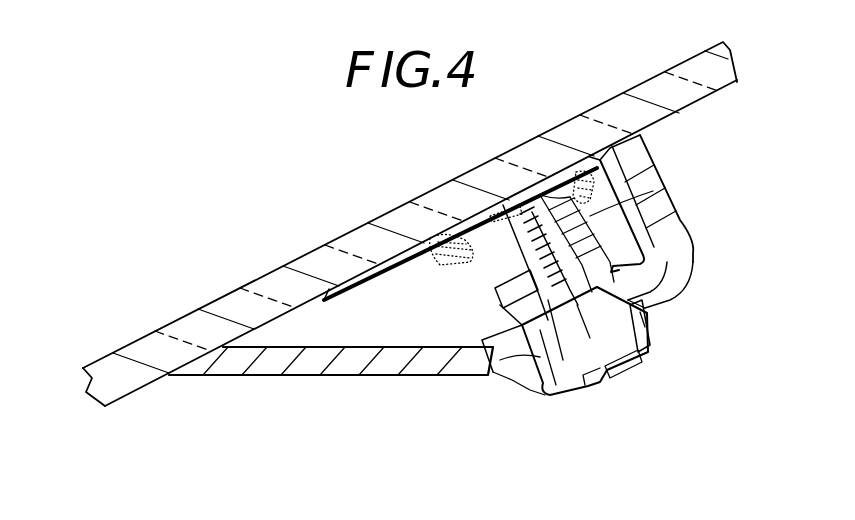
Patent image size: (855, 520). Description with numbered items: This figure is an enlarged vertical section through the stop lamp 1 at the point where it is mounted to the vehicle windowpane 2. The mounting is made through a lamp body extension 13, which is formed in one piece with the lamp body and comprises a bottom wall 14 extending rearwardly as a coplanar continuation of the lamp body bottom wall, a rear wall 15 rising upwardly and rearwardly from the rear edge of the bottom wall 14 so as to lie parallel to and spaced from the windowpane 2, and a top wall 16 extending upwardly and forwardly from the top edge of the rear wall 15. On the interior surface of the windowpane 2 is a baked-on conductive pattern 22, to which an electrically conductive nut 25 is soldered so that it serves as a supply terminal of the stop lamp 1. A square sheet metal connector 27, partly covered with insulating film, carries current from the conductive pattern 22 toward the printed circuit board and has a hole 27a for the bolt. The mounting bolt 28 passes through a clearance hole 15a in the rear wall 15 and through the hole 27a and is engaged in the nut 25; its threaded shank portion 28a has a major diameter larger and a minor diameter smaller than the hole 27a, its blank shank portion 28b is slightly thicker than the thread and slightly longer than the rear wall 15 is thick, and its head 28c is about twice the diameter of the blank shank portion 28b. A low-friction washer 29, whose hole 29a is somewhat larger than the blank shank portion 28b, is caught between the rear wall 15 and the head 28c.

The stop lamp 1 is at (683, 405).
The vehicle windowpane 2 is at (623, 92).
The lamp body extension 13 is at (655, 306).
The bottom wall 14 is at (320, 377).
The rear wall 15 is at (667, 287).
The clearance hole 15a is at (648, 348).
The top wall 16 is at (672, 210).
The conductive pattern 22 is at (355, 288).
The nut 25 is at (657, 172).
The sheet metal connector 27 is at (520, 320).
The hole 27a is at (515, 297).
The mounting bolt 28 is at (568, 392).
The threaded shank portion 28a is at (505, 225).
The blank shank portion 28b is at (510, 378).
The head 28c is at (615, 380).
The washer 29 is at (520, 362).
The hole 29a is at (542, 390).